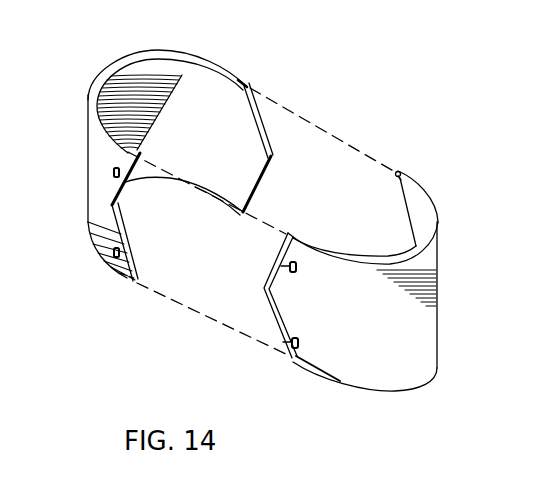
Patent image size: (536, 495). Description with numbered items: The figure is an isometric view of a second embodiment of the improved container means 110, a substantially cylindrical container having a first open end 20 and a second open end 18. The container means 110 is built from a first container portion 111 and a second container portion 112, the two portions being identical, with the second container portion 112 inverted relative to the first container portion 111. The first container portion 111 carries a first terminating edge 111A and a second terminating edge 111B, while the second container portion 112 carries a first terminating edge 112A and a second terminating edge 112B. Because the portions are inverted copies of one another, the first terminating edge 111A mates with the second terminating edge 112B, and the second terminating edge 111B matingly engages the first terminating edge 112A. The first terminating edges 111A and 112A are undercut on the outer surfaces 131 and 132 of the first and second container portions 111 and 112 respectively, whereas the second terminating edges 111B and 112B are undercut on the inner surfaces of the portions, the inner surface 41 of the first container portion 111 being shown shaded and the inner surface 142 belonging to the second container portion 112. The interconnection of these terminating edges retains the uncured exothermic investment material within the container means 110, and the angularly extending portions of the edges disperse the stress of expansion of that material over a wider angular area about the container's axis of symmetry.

The container means 110 is at (248, 64).
The first container portion 111 is at (98, 164).
The second container portion 112 is at (428, 329).
The first terminating edge 111A is at (270, 158).
The second terminating edge 111B is at (125, 205).
The first terminating edge 112A is at (270, 290).
The second terminating edge 112B is at (407, 216).
The second open end 18 is at (233, 86).
The first open end 20 is at (122, 278).
The inner surface of band 41 is at (197, 88).
The outer surface 131 is at (107, 250).
The outer surface 132 is at (402, 378).
The inner surface 142 is at (420, 222).